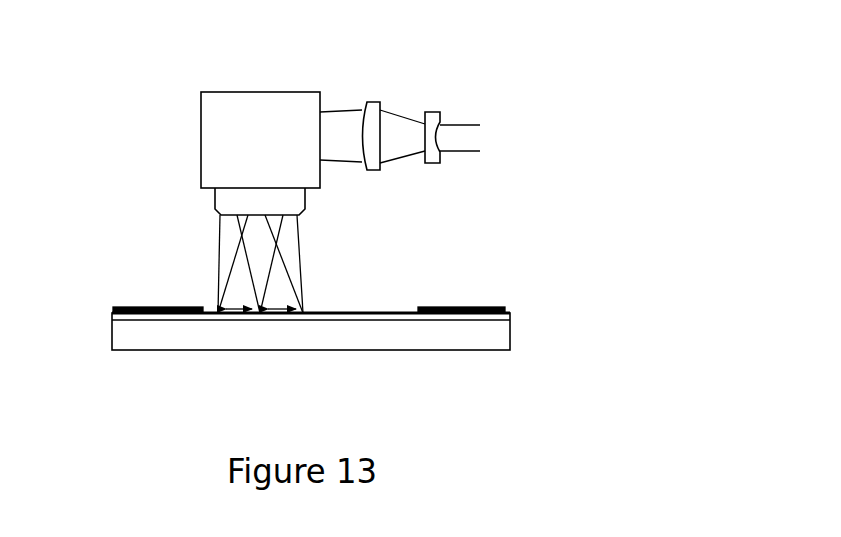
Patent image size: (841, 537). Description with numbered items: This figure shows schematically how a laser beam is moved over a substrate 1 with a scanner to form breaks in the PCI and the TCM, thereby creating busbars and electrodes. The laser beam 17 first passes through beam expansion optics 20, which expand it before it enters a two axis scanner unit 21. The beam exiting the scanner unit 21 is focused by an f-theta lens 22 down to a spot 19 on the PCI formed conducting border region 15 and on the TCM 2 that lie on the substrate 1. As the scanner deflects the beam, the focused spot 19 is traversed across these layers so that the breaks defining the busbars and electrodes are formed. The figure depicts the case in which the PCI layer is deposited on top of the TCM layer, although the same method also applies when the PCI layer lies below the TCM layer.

The substrate 1 is at (126, 338).
The TCM 2 is at (108, 316).
The PCI formed conducting border region 15 is at (448, 307).
The laser beam 17 is at (468, 118).
The spot 19 is at (306, 309).
The beam expansion optics 20 is at (402, 106).
The two axis scanner unit 21 is at (200, 108).
The f-theta lens 22 is at (214, 205).